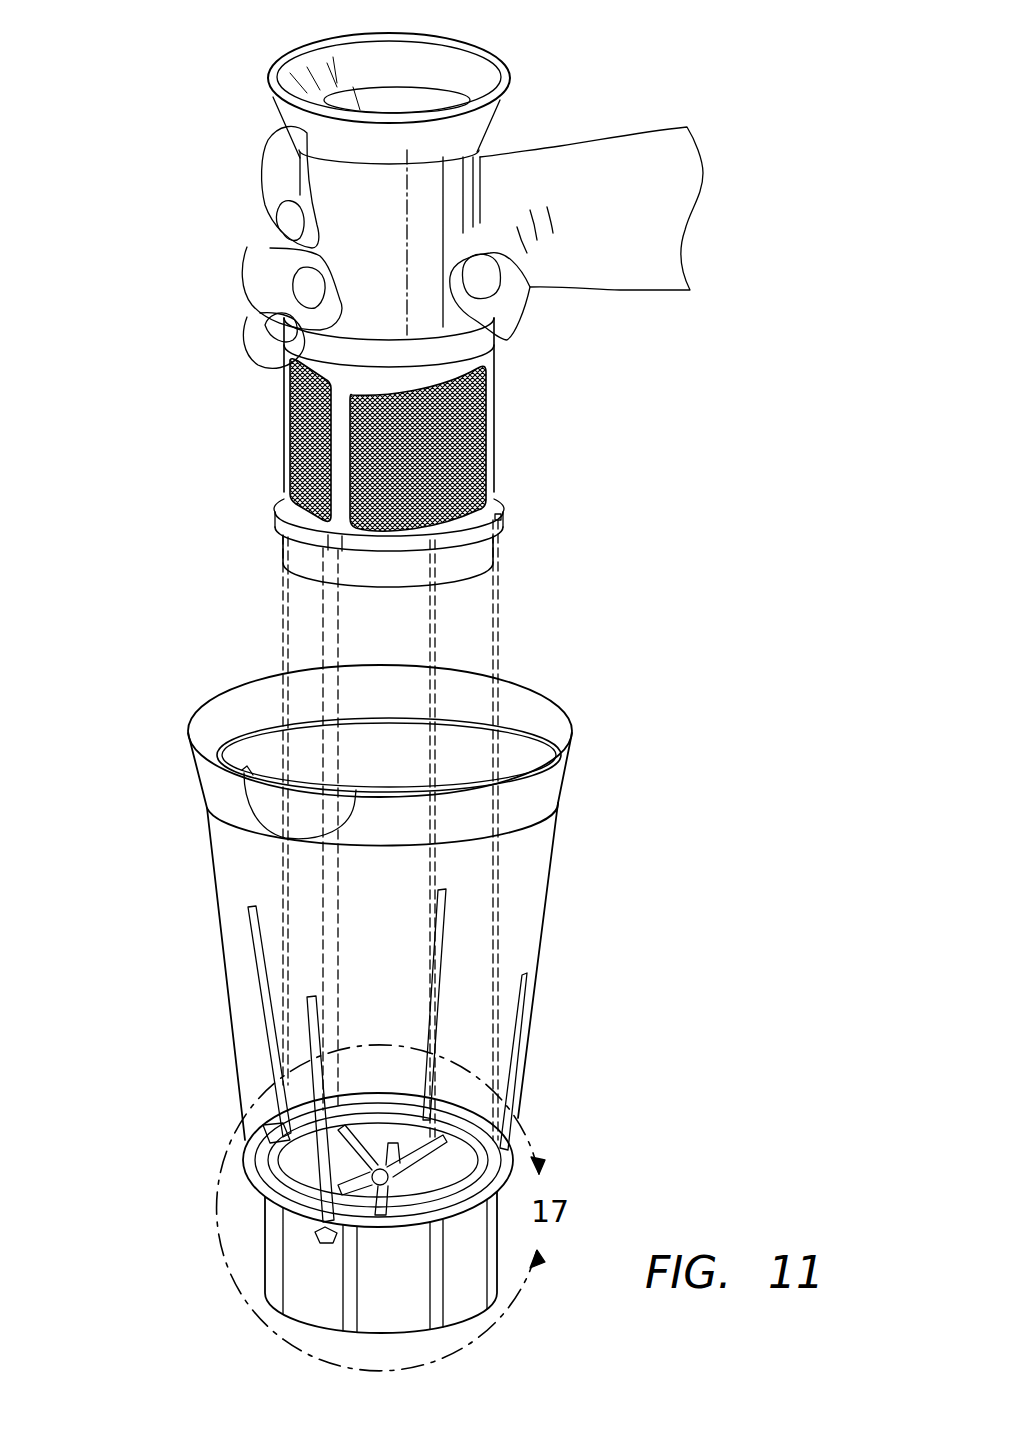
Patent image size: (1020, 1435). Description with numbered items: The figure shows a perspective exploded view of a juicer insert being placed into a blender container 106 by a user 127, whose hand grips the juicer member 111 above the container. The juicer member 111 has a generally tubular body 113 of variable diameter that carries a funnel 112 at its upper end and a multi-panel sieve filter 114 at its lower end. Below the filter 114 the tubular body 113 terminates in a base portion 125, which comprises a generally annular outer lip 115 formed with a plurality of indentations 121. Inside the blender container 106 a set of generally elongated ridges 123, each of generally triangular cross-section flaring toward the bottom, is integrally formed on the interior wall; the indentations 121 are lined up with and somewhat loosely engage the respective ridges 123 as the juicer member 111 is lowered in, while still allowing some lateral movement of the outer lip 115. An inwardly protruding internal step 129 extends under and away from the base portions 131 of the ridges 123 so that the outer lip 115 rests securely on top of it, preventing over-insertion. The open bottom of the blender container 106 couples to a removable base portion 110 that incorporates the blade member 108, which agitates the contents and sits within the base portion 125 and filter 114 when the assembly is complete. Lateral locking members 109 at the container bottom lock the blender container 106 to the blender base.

The blender container 106 is at (533, 920).
The blade member 108 is at (362, 1165).
The locking members 109 is at (318, 1237).
The removable base portion 110 is at (460, 1263).
The juicer member 111 is at (432, 316).
The funnel 112 is at (505, 78).
The tubular body 113 is at (384, 198).
The multi-panel sieve filter 114 is at (292, 440).
The outer lip 115 is at (463, 547).
The indentations 121 is at (497, 517).
The ridges 123 is at (310, 997).
The base portion 125 is at (433, 570).
The user 127 is at (596, 185).
The internal step 129 is at (283, 1163).
The base portions of the ridges 131 is at (290, 1145).